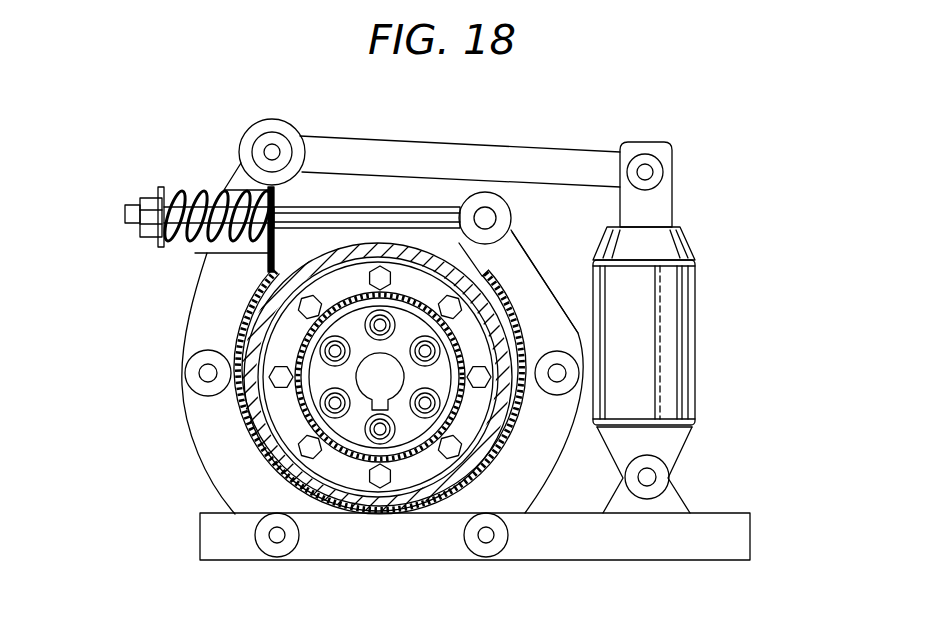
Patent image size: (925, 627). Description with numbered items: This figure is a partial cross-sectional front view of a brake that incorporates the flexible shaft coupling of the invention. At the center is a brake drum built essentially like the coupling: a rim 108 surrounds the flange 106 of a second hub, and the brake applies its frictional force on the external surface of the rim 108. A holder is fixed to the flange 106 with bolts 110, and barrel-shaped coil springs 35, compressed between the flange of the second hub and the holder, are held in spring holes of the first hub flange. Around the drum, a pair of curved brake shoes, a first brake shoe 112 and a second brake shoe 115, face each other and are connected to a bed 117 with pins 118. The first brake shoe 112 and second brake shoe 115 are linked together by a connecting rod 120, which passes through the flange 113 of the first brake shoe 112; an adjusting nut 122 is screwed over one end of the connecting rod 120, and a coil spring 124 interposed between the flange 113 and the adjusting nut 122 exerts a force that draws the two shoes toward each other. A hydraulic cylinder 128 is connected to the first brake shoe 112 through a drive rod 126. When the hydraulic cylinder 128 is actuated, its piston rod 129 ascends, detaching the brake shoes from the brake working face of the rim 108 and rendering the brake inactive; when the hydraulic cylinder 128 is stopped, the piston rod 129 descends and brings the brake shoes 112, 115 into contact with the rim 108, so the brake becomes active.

The barrel-shaped coil springs 35 is at (335, 406).
The flange 106 is at (399, 310).
The rim 108 is at (380, 305).
The bolts 110 is at (350, 374).
The first brake shoe 112 is at (338, 373).
The flange 113 is at (196, 253).
The second brake shoe 115 is at (526, 262).
The bed 117 is at (475, 566).
The pins 118 is at (381, 566).
The connecting rod 120 is at (312, 160).
The adjusting nut 122 is at (123, 194).
The coil spring 124 is at (217, 186).
The drive rod 126 is at (430, 139).
The hydraulic cylinder 128 is at (689, 370).
The piston rod 129 is at (683, 184).